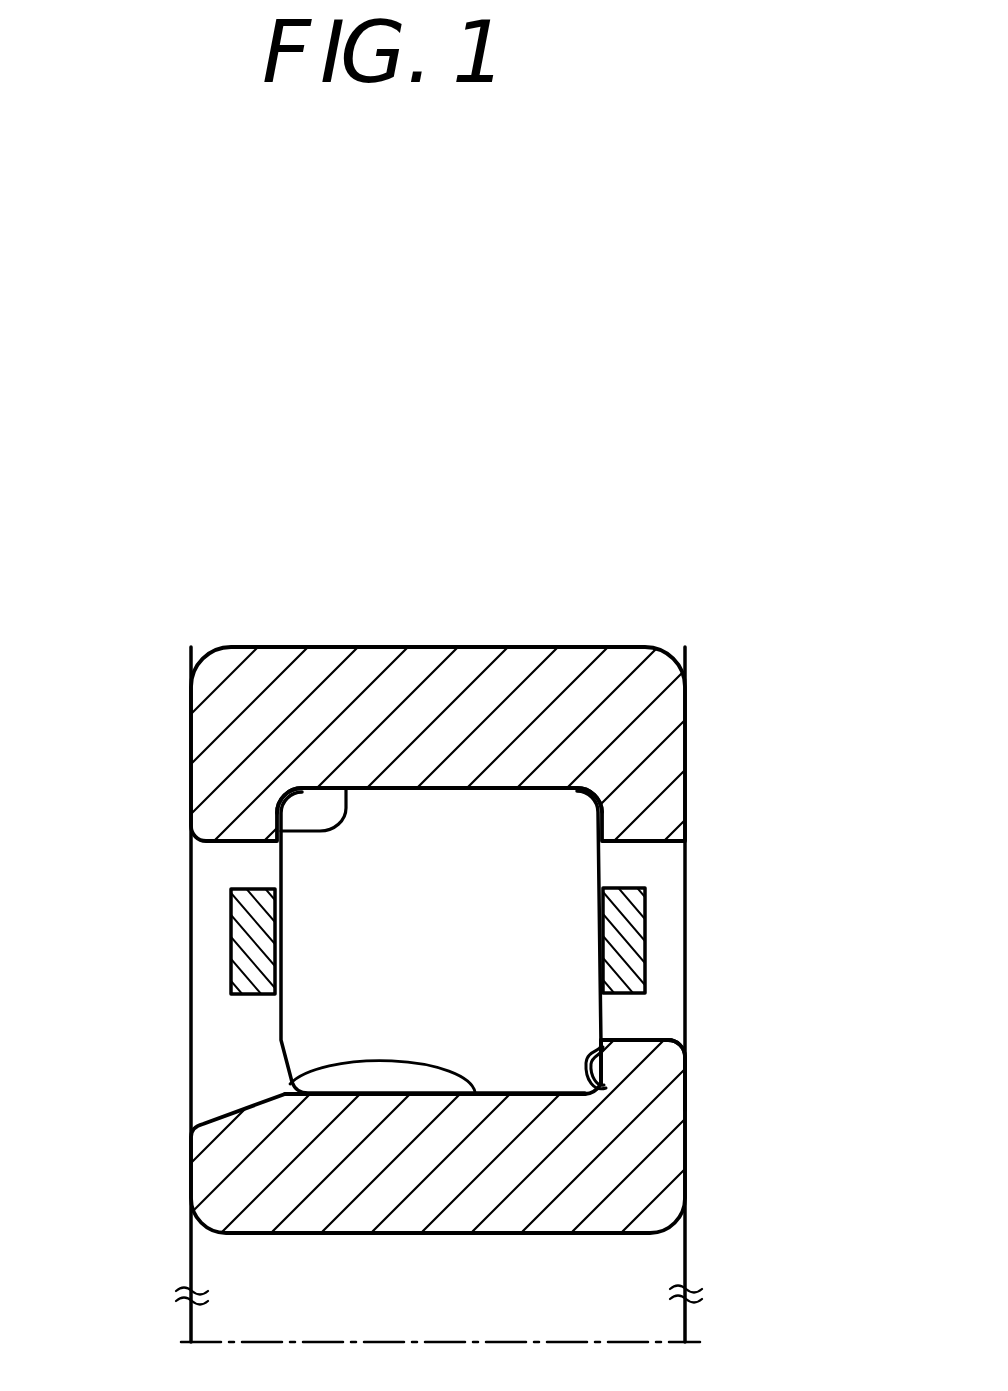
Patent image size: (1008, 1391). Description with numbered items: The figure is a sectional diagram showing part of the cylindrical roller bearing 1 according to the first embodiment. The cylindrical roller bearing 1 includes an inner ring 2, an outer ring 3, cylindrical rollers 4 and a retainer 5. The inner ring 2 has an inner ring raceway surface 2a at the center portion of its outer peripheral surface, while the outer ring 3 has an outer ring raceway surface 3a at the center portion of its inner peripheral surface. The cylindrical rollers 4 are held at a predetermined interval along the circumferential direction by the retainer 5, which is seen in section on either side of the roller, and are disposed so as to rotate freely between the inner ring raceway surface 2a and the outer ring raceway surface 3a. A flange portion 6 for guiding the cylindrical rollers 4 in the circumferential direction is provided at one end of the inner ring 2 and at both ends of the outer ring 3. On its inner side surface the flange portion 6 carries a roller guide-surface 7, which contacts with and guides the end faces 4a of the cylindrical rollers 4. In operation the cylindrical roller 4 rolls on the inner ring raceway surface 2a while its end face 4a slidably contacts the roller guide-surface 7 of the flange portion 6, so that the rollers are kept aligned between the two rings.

The cylindrical roller bearing 1 is at (786, 694).
The inner ring 2 is at (247, 1177).
The inner ring raceway surface 2a is at (282, 1083).
The outer ring 3 is at (240, 747).
The outer ring raceway surface 3a is at (283, 828).
The cylindrical roller 4 is at (290, 1043).
The end face 4a is at (603, 1012).
The retainer 5 is at (250, 942).
The flange portion 6 is at (668, 1056).
The roller guide-surface 7 is at (604, 1046).